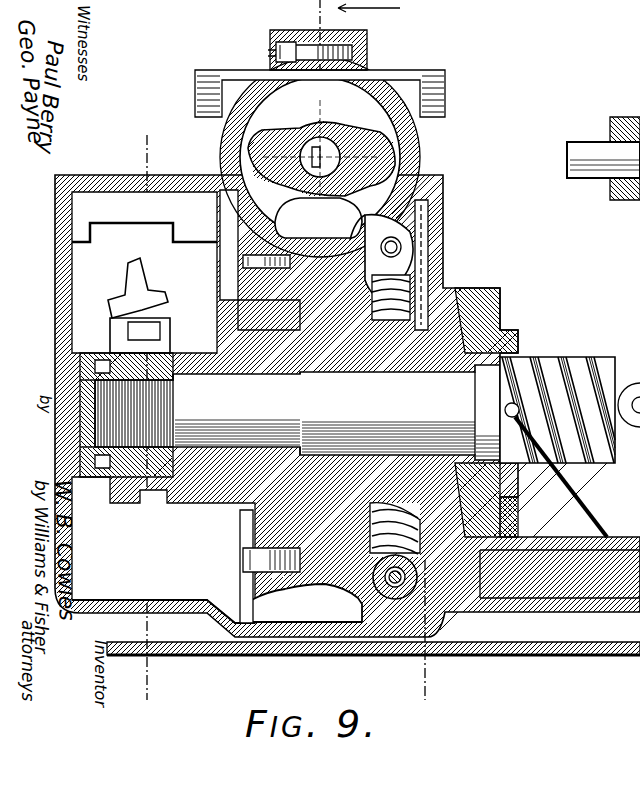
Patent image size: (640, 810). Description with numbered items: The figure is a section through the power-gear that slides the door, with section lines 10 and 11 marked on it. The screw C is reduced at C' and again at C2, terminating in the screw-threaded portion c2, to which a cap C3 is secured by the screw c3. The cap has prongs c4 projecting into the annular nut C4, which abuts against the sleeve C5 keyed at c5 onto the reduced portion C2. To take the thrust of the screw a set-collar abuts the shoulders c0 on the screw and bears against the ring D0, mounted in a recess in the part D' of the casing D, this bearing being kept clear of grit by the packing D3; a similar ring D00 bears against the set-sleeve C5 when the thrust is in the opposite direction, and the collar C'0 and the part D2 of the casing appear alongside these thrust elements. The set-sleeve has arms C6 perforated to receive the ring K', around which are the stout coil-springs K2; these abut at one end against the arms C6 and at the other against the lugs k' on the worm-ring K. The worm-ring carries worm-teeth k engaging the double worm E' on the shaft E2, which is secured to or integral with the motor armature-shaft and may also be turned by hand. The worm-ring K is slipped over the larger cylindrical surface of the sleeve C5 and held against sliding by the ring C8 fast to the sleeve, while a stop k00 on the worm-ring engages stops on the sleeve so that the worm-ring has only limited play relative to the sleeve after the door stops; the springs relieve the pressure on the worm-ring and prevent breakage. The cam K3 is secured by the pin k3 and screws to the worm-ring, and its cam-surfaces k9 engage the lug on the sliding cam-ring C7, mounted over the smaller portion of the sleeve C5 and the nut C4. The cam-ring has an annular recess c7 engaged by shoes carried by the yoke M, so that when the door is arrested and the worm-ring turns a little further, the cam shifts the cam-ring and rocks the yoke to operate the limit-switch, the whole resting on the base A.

The double worm E' is at (342, 101).
The shaft E2 is at (593, 157).
The worm-ring K is at (374, 425).
The ring K' is at (421, 245).
The coil-springs K2 is at (408, 265).
The arms C6 is at (397, 603).
The sleeve C5 is at (462, 607).
The worm-teeth k is at (306, 445).
The pin k3 is at (208, 186).
The yoke M is at (130, 297).
The ring C8 is at (243, 560).
The cam K3 is at (143, 305).
The cam-surfaces k9 is at (232, 313).
The prongs c4 is at (100, 352).
The annular nut C4 is at (115, 356).
The cap C3 is at (95, 372).
The screw c3 is at (100, 420).
The screw-threaded portion c2 is at (105, 445).
The casing D is at (45, 490).
The annular recess c7 is at (135, 505).
The sliding cam-ring C7 is at (150, 505).
The stop k00 is at (247, 557).
The base plate A is at (605, 656).
The lugs k' is at (571, 470).
The packing D3 is at (505, 527).
The ring D0 is at (503, 320).
The collar C'0 is at (540, 316).
The shoulders c0 is at (500, 367).
The screw C is at (570, 393).
The reduced portion C2 is at (230, 404).
The key c5 is at (268, 378).
The ring D00 is at (308, 448).
The part of the casing D' is at (361, 383).
The sleeve section D2 is at (413, 347).
The reduced portion C' is at (297, 412).
The section line 11 is at (130, 684).
The section line 10 is at (480, 672).